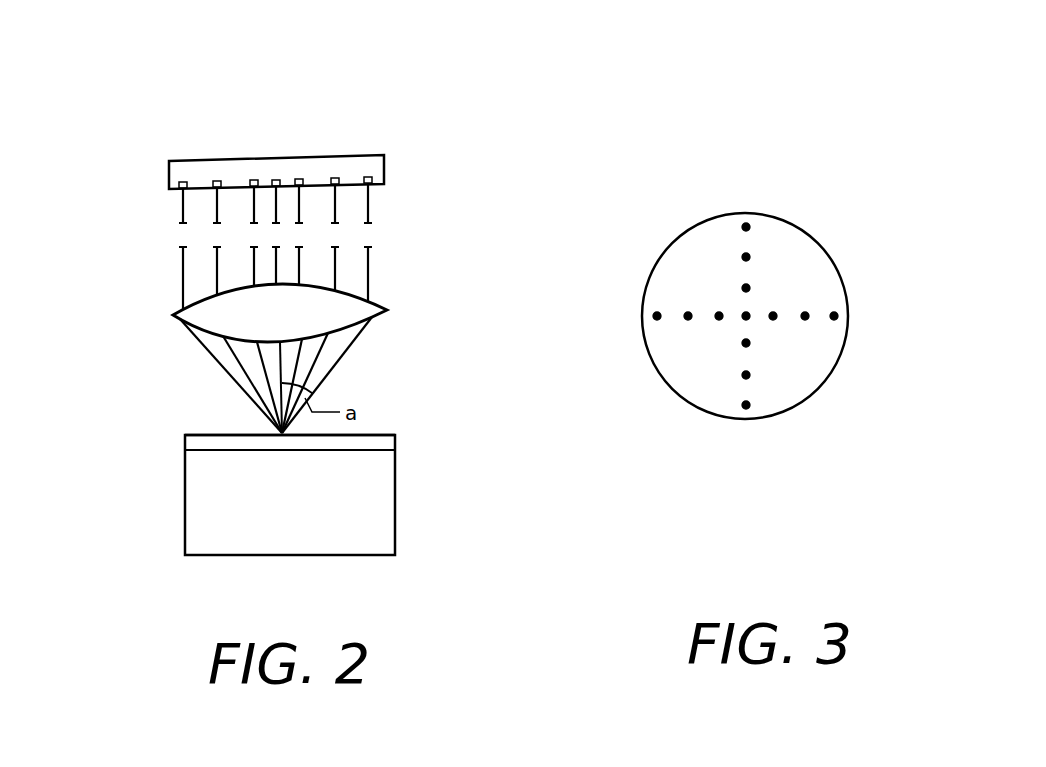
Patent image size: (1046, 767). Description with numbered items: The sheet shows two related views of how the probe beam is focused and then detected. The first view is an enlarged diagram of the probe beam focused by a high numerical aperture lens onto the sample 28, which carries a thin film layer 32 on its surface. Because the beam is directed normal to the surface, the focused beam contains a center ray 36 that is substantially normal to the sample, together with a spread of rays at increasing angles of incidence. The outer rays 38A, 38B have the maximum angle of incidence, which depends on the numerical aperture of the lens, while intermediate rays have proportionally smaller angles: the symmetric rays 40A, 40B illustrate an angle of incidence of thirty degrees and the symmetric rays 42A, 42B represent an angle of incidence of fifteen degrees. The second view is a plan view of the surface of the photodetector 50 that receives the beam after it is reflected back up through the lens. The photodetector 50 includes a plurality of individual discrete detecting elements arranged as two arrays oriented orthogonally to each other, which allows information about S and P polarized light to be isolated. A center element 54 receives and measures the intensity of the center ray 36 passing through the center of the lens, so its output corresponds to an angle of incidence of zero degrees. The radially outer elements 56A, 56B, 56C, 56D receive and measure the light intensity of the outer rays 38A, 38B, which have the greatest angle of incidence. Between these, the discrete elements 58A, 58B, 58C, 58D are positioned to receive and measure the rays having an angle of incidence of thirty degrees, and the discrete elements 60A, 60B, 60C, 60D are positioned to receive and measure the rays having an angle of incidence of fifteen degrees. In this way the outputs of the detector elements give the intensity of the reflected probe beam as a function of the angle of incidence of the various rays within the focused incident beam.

In FIG. 2, the sample 28 is at (395, 492).
In FIG. 2, the thin film layer 32 is at (382, 437).
In FIG. 2, the center ray 36 is at (289, 347).
In FIG. 2, the outer ray 38A is at (202, 343).
In FIG. 2, the outer ray 38B is at (333, 372).
In FIG. 2, the intermediate ray 40A is at (233, 357).
In FIG. 2, the intermediate ray 40B is at (323, 362).
In FIG. 2, the intermediate ray 42A is at (263, 373).
In FIG. 2, the intermediate ray 42B is at (300, 358).
In FIG. 2, the photodetector 50 is at (324, 158).
In FIG. 2, the center element 54 is at (276, 180).
In FIG. 3, the center element 54 is at (746, 316).
In FIG. 2, the radially outer element 56A is at (183, 181).
In FIG. 3, the radially outer element 56A is at (657, 316).
In FIG. 3, the radially outer element 56B is at (746, 227).
In FIG. 2, the radially outer element 56C is at (368, 177).
In FIG. 3, the radially outer element 56C is at (834, 316).
In FIG. 3, the radially outer element 56D is at (746, 343).
In FIG. 2, the discrete detector element 58A is at (217, 181).
In FIG. 3, the discrete detector element 58A is at (688, 316).
In FIG. 3, the discrete detector element 58B is at (746, 257).
In FIG. 2, the discrete detector element 58C is at (335, 178).
In FIG. 3, the discrete detector element 58C is at (805, 316).
In FIG. 3, the discrete detector element 58D is at (746, 375).
In FIG. 2, the discrete detector element 60A is at (254, 180).
In FIG. 3, the discrete detector element 60A is at (719, 316).
In FIG. 3, the discrete detector element 60B is at (746, 288).
In FIG. 2, the discrete detector element 60C is at (299, 179).
In FIG. 3, the discrete detector element 60C is at (773, 316).
In FIG. 3, the discrete detector element 60D is at (746, 405).